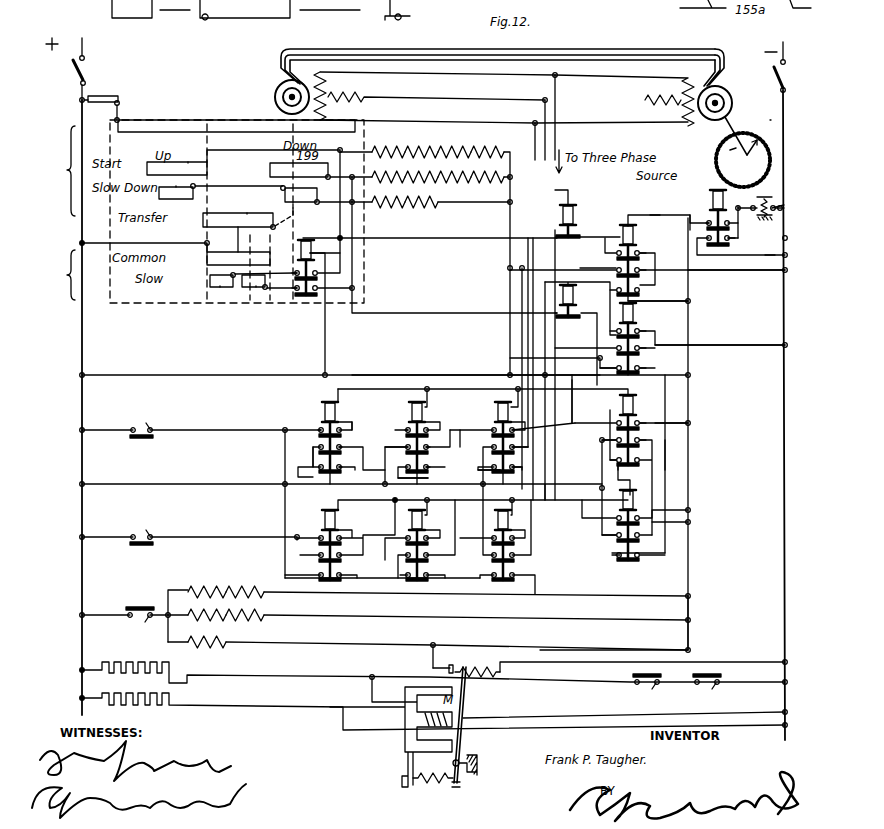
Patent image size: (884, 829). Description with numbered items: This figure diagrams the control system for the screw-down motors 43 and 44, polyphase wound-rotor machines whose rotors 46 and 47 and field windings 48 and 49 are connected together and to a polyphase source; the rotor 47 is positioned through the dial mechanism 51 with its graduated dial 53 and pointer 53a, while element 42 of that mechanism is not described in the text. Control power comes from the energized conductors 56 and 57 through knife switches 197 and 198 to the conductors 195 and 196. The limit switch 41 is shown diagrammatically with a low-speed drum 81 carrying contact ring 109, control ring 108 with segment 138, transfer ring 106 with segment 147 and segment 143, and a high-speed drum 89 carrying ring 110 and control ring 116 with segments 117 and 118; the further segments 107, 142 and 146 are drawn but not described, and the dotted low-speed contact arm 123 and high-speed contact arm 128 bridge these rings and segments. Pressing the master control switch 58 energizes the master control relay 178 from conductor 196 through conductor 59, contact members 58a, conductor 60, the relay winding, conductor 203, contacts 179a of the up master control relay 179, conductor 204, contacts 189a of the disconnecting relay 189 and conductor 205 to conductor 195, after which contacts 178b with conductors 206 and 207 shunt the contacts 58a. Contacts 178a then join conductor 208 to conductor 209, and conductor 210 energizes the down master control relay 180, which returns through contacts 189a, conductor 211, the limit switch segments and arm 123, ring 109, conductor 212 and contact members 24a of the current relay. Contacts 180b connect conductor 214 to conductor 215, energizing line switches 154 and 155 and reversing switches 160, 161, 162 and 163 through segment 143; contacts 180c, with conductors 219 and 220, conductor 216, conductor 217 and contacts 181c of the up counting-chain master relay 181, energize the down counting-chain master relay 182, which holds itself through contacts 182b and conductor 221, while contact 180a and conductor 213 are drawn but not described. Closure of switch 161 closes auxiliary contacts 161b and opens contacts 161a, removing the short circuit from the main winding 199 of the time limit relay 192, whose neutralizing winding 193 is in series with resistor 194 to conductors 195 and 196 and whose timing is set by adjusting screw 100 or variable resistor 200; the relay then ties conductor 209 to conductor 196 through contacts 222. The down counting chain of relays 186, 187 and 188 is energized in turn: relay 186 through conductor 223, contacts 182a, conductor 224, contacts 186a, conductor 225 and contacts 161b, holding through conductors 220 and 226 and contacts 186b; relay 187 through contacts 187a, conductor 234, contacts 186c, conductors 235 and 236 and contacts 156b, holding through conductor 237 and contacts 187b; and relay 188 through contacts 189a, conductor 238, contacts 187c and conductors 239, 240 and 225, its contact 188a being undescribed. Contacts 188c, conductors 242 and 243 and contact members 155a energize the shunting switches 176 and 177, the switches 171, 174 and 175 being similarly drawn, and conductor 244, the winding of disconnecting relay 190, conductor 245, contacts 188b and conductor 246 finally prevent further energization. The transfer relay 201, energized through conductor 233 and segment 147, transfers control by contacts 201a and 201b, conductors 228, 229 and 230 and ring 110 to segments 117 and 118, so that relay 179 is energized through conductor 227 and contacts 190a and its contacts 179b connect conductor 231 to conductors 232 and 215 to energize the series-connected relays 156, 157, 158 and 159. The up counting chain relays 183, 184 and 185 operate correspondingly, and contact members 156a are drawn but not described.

The positive supply conductor 195 is at (80, 109).
The negative supply conductor 196 is at (784, 128).
The positive line switch 56 is at (85, 48).
The line switch blade 197 is at (84, 72).
The negative line switch 57 is at (793, 53).
The line switch blade 198 is at (784, 75).
The brush 24a is at (118, 98).
The conductor 212 is at (118, 112).
The low speed drum controller 41 is at (237, 195).
The low speed drum 81 is at (44, 175).
The high speed drum 89 is at (44, 285).
The drum contact segment 109 is at (218, 128).
The up contact segment 108 is at (237, 161).
The conductor 138 is at (188, 162).
The slow down contact segment 107 is at (210, 186).
The conductor 142 is at (176, 181).
The transfer contact segment 106 is at (227, 215).
The conductor 147 is at (247, 213).
The conductor 128 is at (237, 245).
The conductor 123 is at (300, 210).
The conductor 230 is at (178, 243).
The common contact segment 110 is at (225, 259).
The slow contact segments 116 is at (237, 280).
The contact 117 is at (220, 287).
The contact 118 is at (256, 287).
The down contact segment 146 is at (258, 178).
The contactor armature 199 is at (460, 729).
The contact segment 143 is at (296, 186).
The relay 201 is at (324, 261).
The relay contact 201a is at (295, 262).
The relay contact 201b is at (294, 292).
The conductor 229 is at (330, 253).
The conductor 211 is at (430, 314).
The conductor 228 is at (470, 237).
The resistor 156 is at (372, 145).
The resistor 157 is at (421, 145).
The resistor 158 is at (454, 145).
The resistor 159 is at (490, 253).
The resistor 160 is at (374, 177).
The resistor 161 is at (415, 171).
The resistor 162 is at (448, 171).
The resistor 163 is at (486, 171).
The resistor 154 is at (378, 210).
The resistor 155 is at (458, 210).
The conductor 215 is at (512, 196).
The trolley collector 43 is at (479, 66).
The trolley wheel 46 is at (277, 93).
The trolley collector 44 is at (729, 67).
The trolley wheel 47 is at (735, 103).
The resistor 48 is at (327, 79).
The resistor 49 is at (685, 79).
The meter 51 is at (772, 114).
The meter dial 42 is at (743, 160).
The pointer 53 is at (728, 145).
The pointer arm 53a is at (750, 141).
The relay 58 is at (769, 199).
The relay contact 58a is at (795, 190).
The conductor 59 is at (788, 205).
The contact 60 is at (742, 206).
The relay 178 is at (707, 223).
The relay contact 178a is at (699, 218).
The relay contact 178b is at (749, 246).
The conductor 227 is at (645, 220).
The conductor 203 is at (688, 220).
The conductor 207 is at (740, 232).
The conductor 206 is at (773, 245).
The conductor 208 is at (799, 236).
The relay 190 is at (587, 214).
The relay contact 190a is at (568, 239).
The conductor 232 is at (537, 264).
The relay 179 is at (648, 263).
The relay contact 179a is at (645, 252).
The relay contact 179b is at (663, 272).
The conductor 204 is at (614, 270).
The conductor 210 is at (630, 301).
The conductor 209 is at (690, 285).
The conductor 231 is at (757, 270).
The relay 189 is at (580, 333).
The relay contact 189a is at (570, 314).
The relay 180 is at (671, 339).
The relay contact 180a is at (664, 331).
The relay contact 180b is at (664, 346).
The relay contact 180c is at (664, 362).
The conductor 214 is at (730, 345).
The conductor 245 is at (546, 358).
The conductor 205 is at (205, 374).
The conductor 233 is at (431, 373).
The conductor 244 is at (510, 358).
The conductor 216 is at (651, 464).
The relay 182 is at (514, 459).
The relay contact 182a is at (647, 405).
The conductor 223 is at (685, 422).
The relay contact 182b is at (689, 438).
The conductor 213 is at (667, 470).
The conductor 221 is at (626, 462).
The conductor 219 is at (594, 437).
The conductor 217 is at (608, 458).
The conductor 224 is at (571, 392).
The conductor 220 is at (217, 483).
The relay 181 is at (636, 521).
The relay contact 181c is at (630, 558).
The conductor 242 is at (654, 596).
The relay 186 is at (335, 436).
The relay contact 186a is at (318, 425).
The relay contact 186b is at (356, 448).
The relay contact 186c is at (341, 461).
The conductor 226 is at (309, 450).
The conductor 234 is at (365, 426).
The relay 187 is at (424, 435).
The relay contact 187a is at (403, 431).
The relay contact 187b is at (444, 450).
The relay contact 187c is at (432, 465).
The conductor 237 is at (397, 454).
The conductor 239 is at (416, 485).
The conductor 238 is at (460, 440).
The relay 188 is at (494, 434).
The relay contact 188a is at (545, 424).
The relay contact 188b is at (545, 448).
The relay contact 188c is at (531, 462).
The conductor 246 is at (478, 487).
The limit switch contact 161b is at (146, 424).
The conductor 225 is at (262, 423).
The conductor 240 is at (284, 470).
The limit switch contact 156b is at (142, 531).
The conductor 236 is at (207, 537).
The conductor 235 is at (297, 510).
The relay 183 is at (456, 539).
The relay 184 is at (424, 539).
The relay 185 is at (497, 539).
The conductor 243 is at (480, 582).
The limit switch contact 155a is at (142, 618).
The conductor 174 is at (188, 595).
The resistor 176 is at (200, 585).
The resistor 177 is at (240, 585).
The resistor 175 is at (259, 605).
The resistor 171 is at (223, 637).
The brake coil 200 is at (142, 662).
The coil 194 is at (170, 706).
The limit switch contact 156a is at (647, 681).
The limit switch contact 161a is at (713, 682).
The resistor 222 is at (460, 670).
The contactor magnet 192 is at (415, 732).
The contactor coil 193 is at (425, 712).
The spring 100 is at (406, 787).